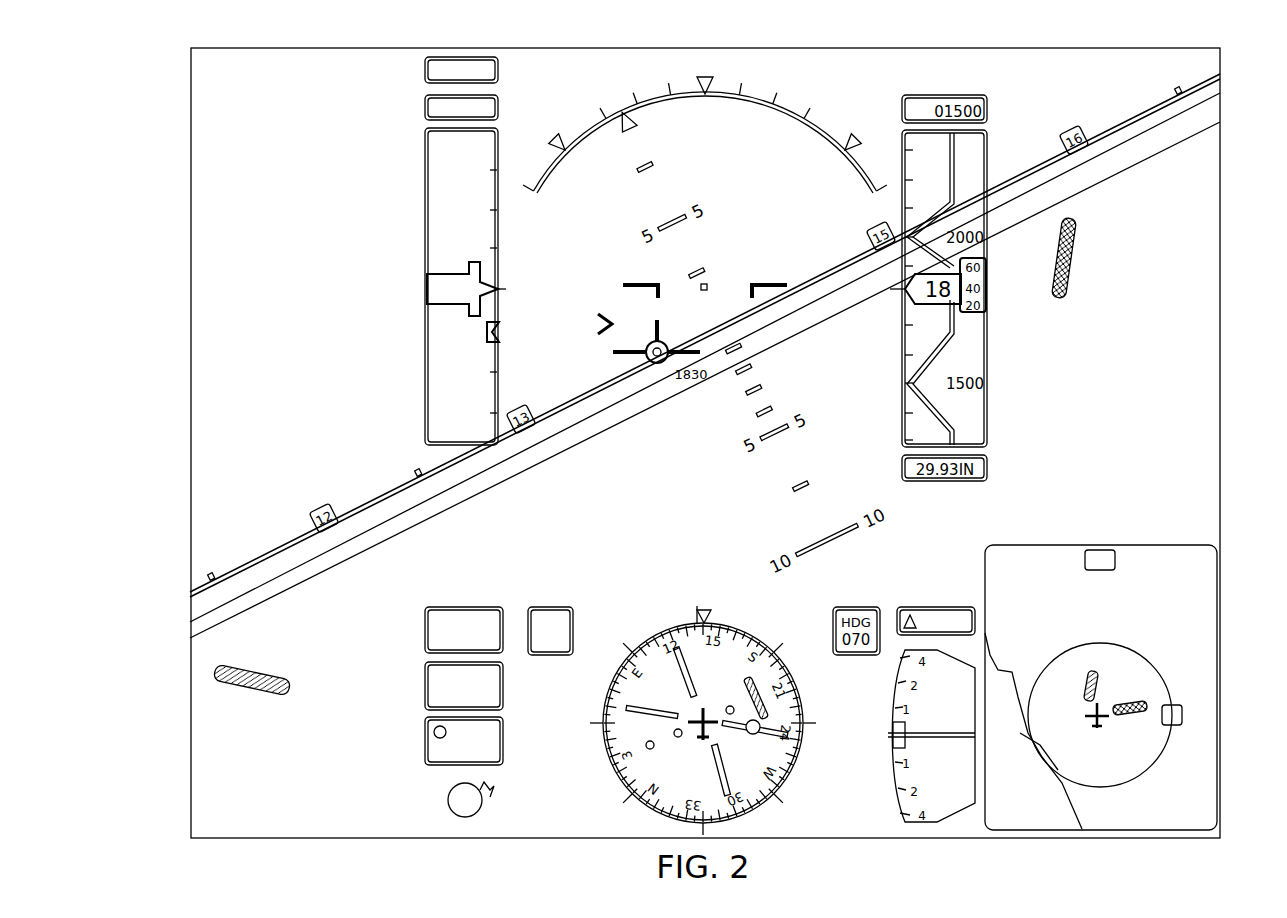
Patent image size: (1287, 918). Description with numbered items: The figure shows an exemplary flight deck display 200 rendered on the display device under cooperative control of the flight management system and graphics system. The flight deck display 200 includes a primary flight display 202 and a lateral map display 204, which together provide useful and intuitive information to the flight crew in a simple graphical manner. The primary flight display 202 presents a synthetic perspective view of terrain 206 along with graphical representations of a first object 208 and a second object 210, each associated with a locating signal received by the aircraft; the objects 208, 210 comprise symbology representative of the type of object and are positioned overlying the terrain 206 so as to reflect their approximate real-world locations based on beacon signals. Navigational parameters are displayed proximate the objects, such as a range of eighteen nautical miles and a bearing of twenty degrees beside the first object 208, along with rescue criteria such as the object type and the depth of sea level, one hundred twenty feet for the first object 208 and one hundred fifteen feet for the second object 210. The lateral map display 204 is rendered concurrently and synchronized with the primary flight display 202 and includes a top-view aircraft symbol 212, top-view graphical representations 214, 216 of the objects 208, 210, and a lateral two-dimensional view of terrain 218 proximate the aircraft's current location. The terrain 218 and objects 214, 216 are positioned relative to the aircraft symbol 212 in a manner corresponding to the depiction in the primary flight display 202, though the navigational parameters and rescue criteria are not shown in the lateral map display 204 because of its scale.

The flight deck display 200 is at (191, 86).
The primary flight display 202 is at (305, 206).
The lateral map display 204 is at (1135, 685).
The terrain 206 is at (393, 806).
The first object 208 is at (1076, 228).
The second object 210 is at (272, 694).
The aircraft symbol 212 is at (1105, 722).
The top-view graphical representation of object 214 is at (1140, 703).
The top-view graphical representation of object 216 is at (1086, 672).
The terrain 218 is at (995, 812).